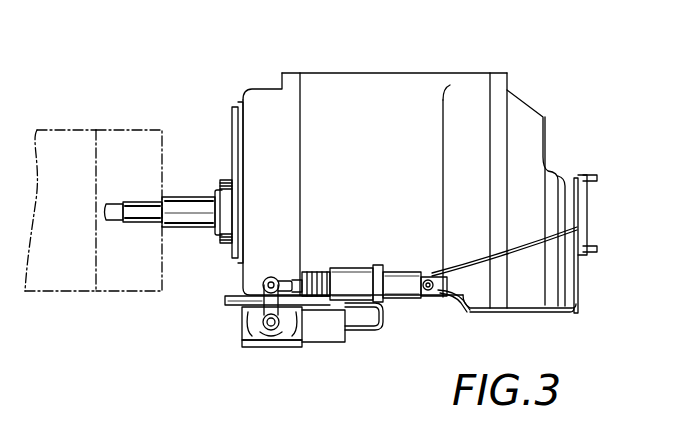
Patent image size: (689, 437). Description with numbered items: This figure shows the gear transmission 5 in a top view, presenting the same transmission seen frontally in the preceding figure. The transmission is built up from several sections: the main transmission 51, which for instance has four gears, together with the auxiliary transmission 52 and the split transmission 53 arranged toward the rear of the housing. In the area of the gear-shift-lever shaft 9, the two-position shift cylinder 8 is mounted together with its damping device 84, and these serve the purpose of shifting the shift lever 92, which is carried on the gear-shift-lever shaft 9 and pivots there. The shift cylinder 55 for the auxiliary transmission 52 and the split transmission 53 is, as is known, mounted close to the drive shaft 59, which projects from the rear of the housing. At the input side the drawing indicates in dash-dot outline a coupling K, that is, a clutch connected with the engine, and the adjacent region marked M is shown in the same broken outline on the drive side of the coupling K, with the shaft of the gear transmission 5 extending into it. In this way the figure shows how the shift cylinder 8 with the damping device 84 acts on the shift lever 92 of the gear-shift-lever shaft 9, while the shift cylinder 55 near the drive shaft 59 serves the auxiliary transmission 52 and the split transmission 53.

The gear transmission 5 is at (214, 84).
The main transmission 51 is at (397, 105).
The auxiliary transmission 52 is at (522, 120).
The split transmission 53 is at (268, 120).
The shift cylinder 55 is at (565, 280).
The drive shaft 59 is at (587, 203).
The two-position shift cylinder 8 is at (352, 278).
The damping device 84 is at (397, 280).
The gear-shift-lever shaft 9 is at (271, 330).
The shift lever 92 is at (248, 320).
The motor region M is at (70, 147).
The coupling K is at (133, 147).